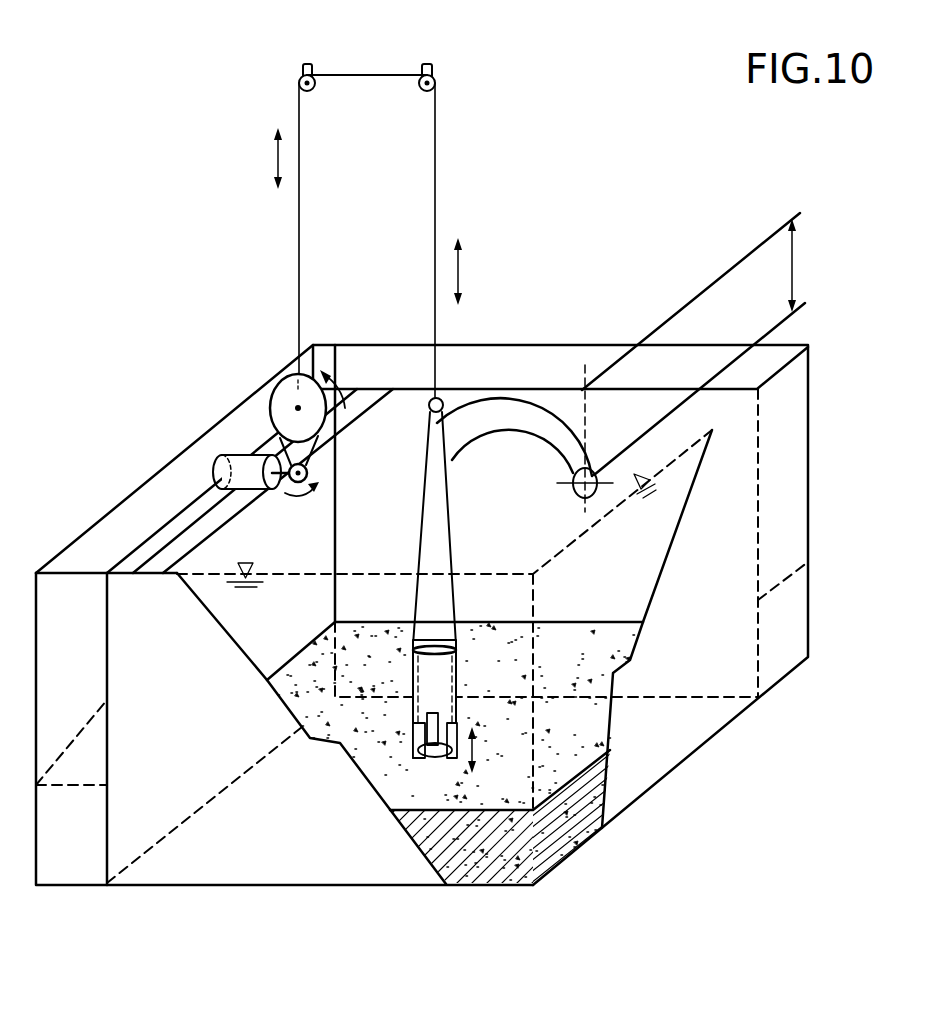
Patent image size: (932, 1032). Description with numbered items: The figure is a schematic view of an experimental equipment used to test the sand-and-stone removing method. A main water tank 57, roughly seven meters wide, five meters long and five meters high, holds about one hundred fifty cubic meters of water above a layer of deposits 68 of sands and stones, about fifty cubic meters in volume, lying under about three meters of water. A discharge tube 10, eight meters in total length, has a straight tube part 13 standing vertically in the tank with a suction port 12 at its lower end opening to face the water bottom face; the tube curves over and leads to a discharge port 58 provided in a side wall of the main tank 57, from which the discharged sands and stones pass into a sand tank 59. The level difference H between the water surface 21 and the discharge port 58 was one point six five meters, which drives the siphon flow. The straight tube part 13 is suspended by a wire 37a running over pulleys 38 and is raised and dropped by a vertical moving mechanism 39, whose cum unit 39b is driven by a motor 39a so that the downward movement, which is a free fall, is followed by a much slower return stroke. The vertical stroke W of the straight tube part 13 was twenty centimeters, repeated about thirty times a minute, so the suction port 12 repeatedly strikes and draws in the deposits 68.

The discharge tube 10 is at (535, 432).
The suction port 12 is at (423, 757).
The straight tube part 13 is at (456, 665).
The water surface 21 is at (556, 390).
The wire 37a is at (434, 163).
The pulleys 38 is at (432, 82).
The vertical moving mechanism 39 is at (203, 360).
The motor 39a is at (240, 463).
The cum unit 39b is at (282, 393).
The main water tank 57 is at (270, 537).
The discharge port 58 is at (600, 507).
The sand tank 59 is at (787, 420).
The deposits 68 is at (565, 840).
The level difference H is at (709, 344).
The vertical stroke W is at (400, 747).